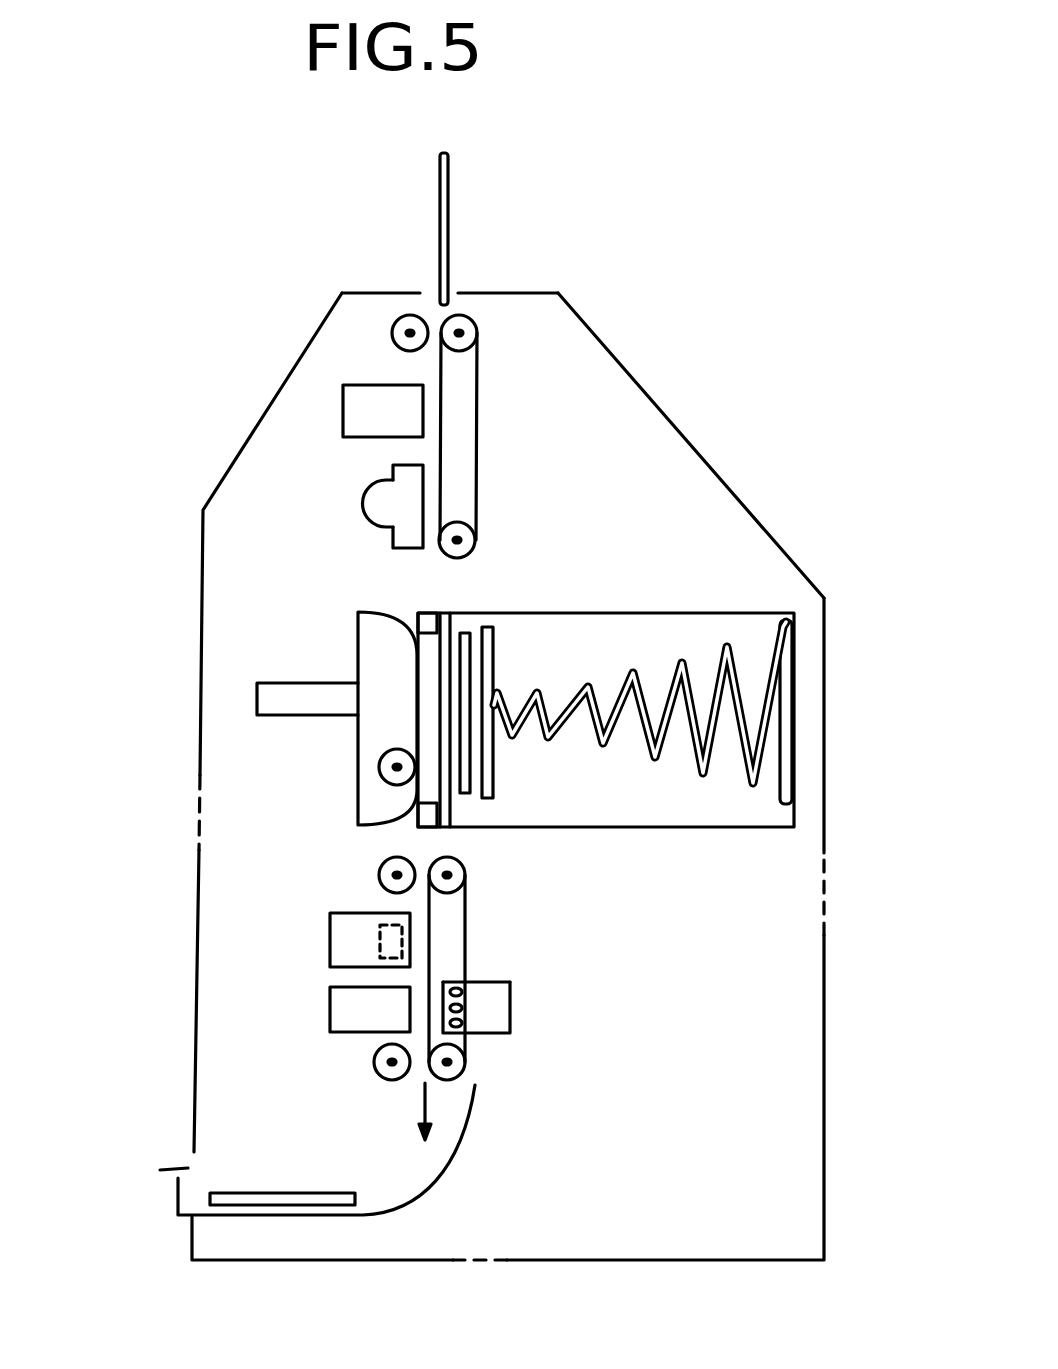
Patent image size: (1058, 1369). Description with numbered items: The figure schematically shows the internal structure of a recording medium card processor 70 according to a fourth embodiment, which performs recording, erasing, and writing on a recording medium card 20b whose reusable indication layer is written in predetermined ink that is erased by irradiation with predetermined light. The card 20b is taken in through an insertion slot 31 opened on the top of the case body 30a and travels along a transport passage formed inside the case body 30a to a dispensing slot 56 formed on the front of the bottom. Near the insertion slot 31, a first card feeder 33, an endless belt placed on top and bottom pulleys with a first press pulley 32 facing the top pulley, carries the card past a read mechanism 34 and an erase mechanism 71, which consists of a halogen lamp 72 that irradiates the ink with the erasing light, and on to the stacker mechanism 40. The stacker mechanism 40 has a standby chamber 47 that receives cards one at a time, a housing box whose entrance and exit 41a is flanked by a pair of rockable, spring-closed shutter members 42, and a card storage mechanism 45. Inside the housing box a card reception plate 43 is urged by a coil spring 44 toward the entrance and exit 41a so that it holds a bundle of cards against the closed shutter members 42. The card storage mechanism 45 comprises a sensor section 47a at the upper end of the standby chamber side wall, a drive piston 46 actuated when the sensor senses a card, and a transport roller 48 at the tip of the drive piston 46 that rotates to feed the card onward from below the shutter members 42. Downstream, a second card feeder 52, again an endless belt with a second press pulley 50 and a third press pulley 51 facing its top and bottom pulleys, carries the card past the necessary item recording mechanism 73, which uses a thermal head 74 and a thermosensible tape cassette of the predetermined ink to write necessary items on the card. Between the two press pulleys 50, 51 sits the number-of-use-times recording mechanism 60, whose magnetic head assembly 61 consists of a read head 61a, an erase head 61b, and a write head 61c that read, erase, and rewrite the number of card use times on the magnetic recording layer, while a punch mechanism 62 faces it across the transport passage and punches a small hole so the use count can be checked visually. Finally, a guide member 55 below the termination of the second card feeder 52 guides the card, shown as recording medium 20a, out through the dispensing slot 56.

The recording medium card processor 70 is at (633, 207).
The case body 30a is at (603, 342).
The insertion slot 31 is at (425, 292).
The recording medium card 20b is at (449, 220).
The first press pulley 32 is at (392, 333).
The first card feeder 33 is at (480, 428).
The read mechanism 34 is at (343, 405).
The erase mechanism 71 is at (377, 477).
The halogen lamp 72 is at (365, 497).
The card storage mechanism 45 is at (337, 617).
The drive piston 46 is at (257, 686).
The standby chamber 47 is at (423, 730).
The sensor section 47a is at (432, 603).
The transport roller 48 is at (378, 767).
The shutter member 42 is at (467, 608).
The stacker mechanism 40 is at (602, 606).
The card reception plate 43 is at (500, 652).
The coil spring 44 is at (737, 672).
The recording paper 20a is at (467, 753).
The entrance and exit 41a is at (433, 800).
The second press pulley 50 is at (377, 877).
The magnetic head assembly 61 is at (451, 978).
The necessary item recording mechanism 73 is at (330, 935).
The thermal head 74 is at (357, 967).
The punch mechanism 62 is at (330, 1017).
The third press pulley 51 is at (378, 1068).
The number-of-use-times recording mechanism 60 is at (510, 985).
The second card feeder 52 is at (510, 982).
The read head 61a is at (462, 992).
The erase head 61b is at (462, 1008).
The write head 61c is at (462, 1023).
The guide member 55 is at (460, 1153).
The dispensing slot 56 is at (165, 1170).